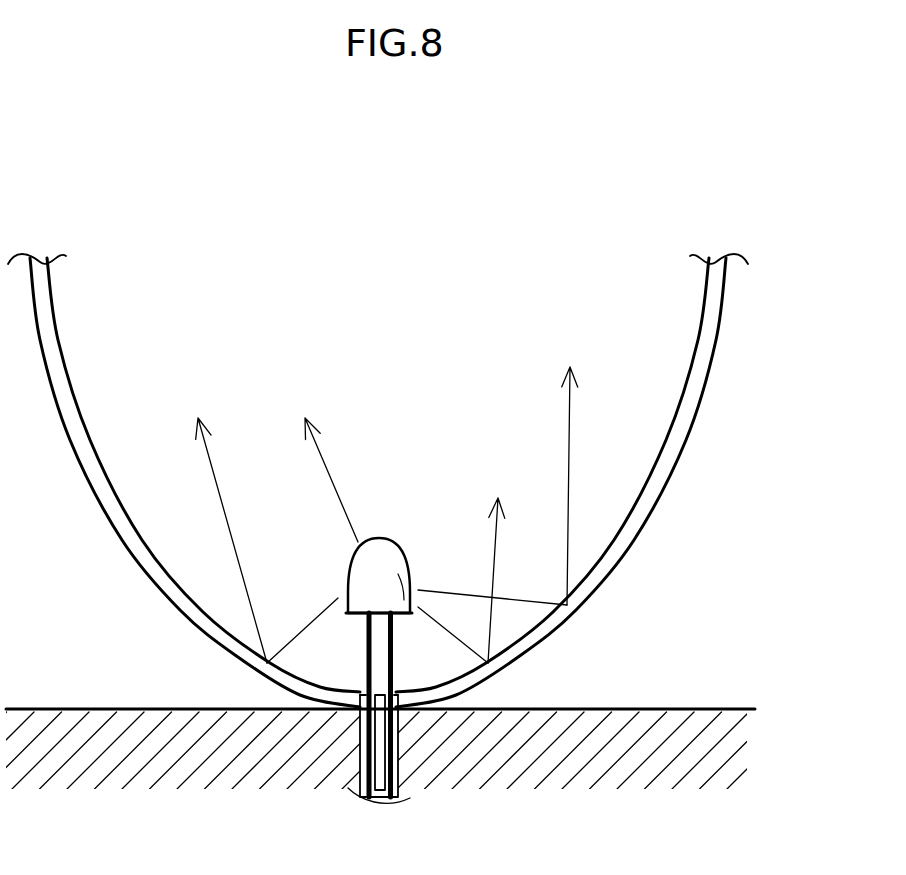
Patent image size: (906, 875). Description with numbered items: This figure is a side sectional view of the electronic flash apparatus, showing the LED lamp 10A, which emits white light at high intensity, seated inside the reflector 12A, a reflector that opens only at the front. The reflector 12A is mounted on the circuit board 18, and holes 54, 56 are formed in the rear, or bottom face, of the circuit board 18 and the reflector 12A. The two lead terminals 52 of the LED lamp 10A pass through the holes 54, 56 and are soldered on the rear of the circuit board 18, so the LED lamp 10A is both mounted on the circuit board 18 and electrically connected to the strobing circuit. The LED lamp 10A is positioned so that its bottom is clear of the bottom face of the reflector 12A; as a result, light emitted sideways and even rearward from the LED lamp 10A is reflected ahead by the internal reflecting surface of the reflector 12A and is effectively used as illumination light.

The reflector 12A is at (66, 368).
The LED lamp 10A is at (380, 560).
The circuit board 18 is at (107, 708).
The lead terminals 52 is at (392, 630).
The hole 54 is at (369, 685).
The hole 56 is at (396, 790).